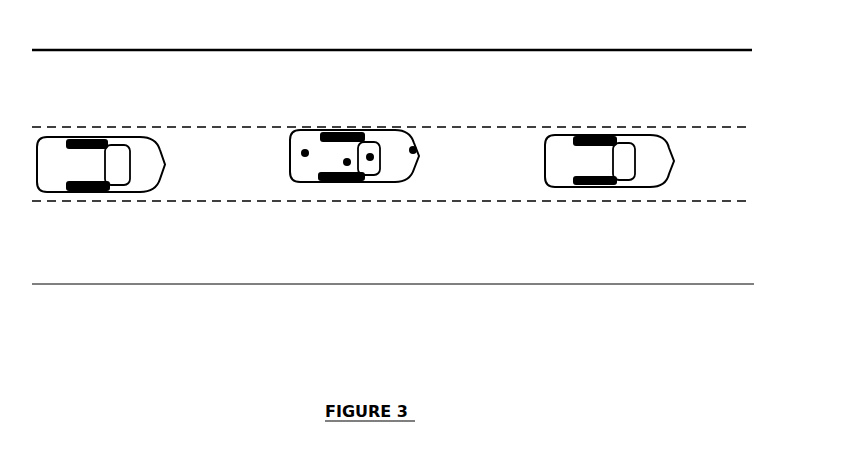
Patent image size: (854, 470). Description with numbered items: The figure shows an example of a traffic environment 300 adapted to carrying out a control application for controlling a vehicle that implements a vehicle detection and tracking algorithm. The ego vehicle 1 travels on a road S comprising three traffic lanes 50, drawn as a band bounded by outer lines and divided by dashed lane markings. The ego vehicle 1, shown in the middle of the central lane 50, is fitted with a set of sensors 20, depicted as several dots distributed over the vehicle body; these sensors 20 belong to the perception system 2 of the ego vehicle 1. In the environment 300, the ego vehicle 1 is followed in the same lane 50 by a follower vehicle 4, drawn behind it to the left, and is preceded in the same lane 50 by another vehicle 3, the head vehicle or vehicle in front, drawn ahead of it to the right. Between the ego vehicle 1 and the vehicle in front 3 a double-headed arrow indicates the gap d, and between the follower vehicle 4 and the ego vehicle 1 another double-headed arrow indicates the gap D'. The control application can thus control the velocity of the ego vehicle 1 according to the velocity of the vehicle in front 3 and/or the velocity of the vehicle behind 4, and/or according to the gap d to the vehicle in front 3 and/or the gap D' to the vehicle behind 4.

The traffic environment 300 is at (494, 19).
The ego vehicle 1 is at (340, 140).
The perception system 2 is at (348, 140).
The vehicle in front 3 is at (612, 188).
The follower vehicle 4 is at (95, 191).
The set of sensors 20 is at (305, 153).
The traffic lane 50 is at (223, 203).
The road S is at (534, 285).
The gap between ego vehicle and vehicle behind D' is at (225, 159).
The gap between ego vehicle and vehicle in front d is at (545, 165).